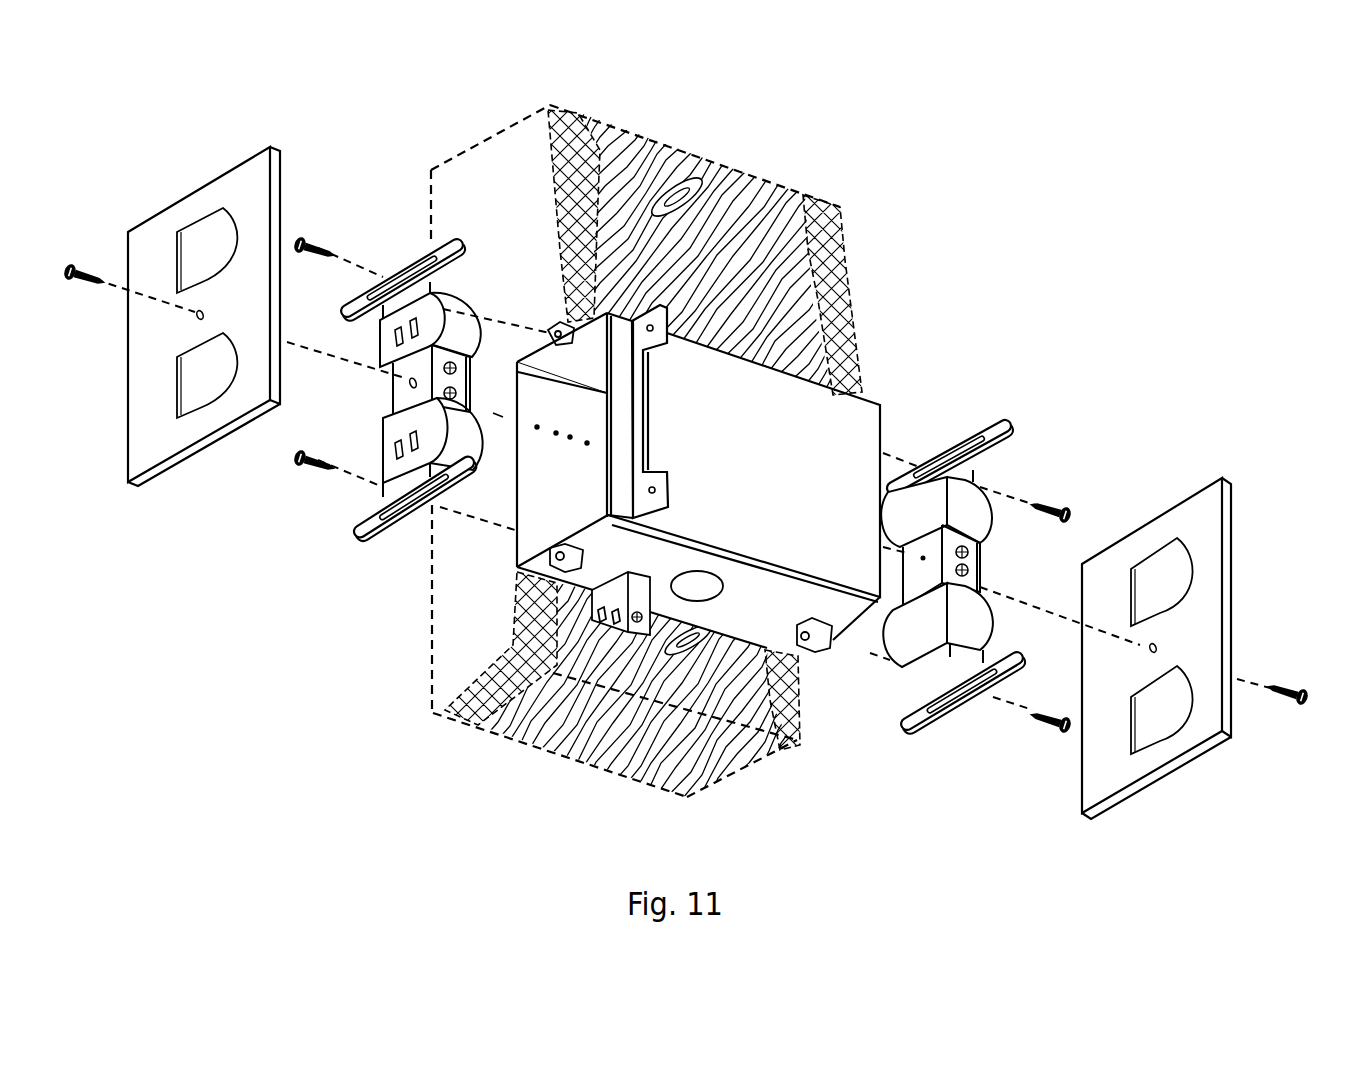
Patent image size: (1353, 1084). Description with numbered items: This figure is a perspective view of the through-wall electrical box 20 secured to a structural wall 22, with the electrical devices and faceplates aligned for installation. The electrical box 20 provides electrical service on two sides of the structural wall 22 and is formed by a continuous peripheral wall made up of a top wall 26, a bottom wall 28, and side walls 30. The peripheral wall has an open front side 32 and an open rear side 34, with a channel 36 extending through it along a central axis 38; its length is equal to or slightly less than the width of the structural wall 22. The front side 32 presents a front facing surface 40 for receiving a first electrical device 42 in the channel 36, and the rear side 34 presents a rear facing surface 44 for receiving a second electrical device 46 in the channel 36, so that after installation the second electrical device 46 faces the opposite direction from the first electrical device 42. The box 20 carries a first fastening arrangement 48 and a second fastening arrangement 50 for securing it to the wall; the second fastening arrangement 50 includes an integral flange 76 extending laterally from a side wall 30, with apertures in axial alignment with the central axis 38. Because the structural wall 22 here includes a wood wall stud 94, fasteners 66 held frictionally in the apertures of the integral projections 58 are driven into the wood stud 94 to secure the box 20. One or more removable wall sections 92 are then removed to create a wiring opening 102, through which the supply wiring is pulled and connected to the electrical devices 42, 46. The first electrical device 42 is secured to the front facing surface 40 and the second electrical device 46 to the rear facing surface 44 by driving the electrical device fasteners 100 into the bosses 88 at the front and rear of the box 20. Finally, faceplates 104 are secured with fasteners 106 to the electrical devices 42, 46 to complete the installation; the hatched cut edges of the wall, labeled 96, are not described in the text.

The through-wall electrical box 20 is at (750, 533).
The structural wall 22 is at (662, 433).
The top wall 26 is at (572, 373).
The bottom wall 28 is at (610, 561).
The side walls 30 is at (740, 423).
The open front side 32 is at (535, 352).
The open rear side 34 is at (971, 577).
The channel 36 is at (517, 527).
The central axis 38 is at (556, 428).
The front facing surface 40 is at (592, 412).
The first electrical device 42 is at (368, 540).
The rear facing surface 44 is at (898, 434).
The second electrical device 46 is at (905, 523).
The first fastening arrangement 48 is at (630, 648).
The second fastening arrangement 50 is at (684, 486).
The integral projections 58 is at (600, 598).
The fasteners 66 is at (640, 608).
The integral flange 76 is at (656, 352).
The bosses 88 is at (552, 332).
The removable wall sections 92 is at (686, 598).
The wood wall stud 94 is at (700, 178).
The wall cut edges 96 is at (562, 145).
The electrical device fasteners 100 is at (307, 243).
The wiring opening 102 is at (745, 590).
The faceplates 104 is at (163, 440).
The fasteners 106 is at (75, 283).